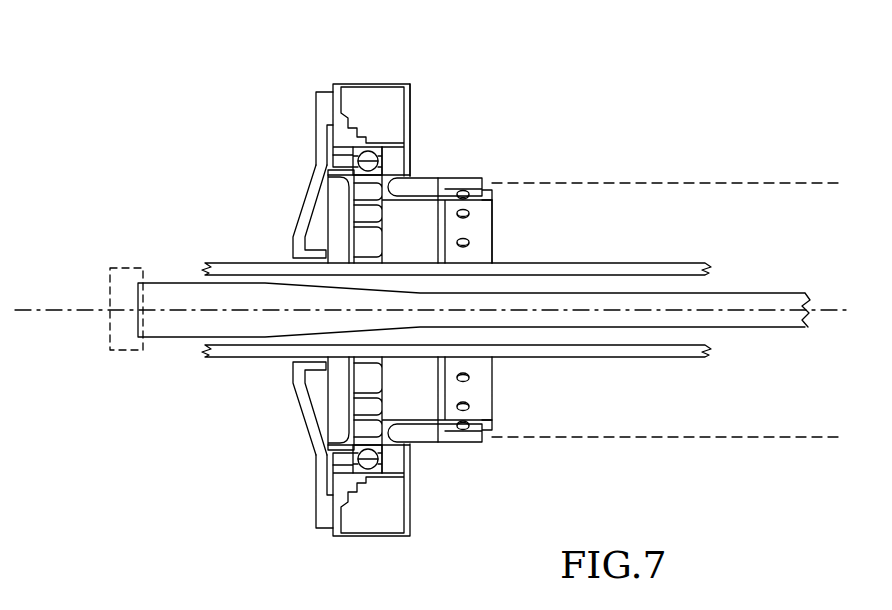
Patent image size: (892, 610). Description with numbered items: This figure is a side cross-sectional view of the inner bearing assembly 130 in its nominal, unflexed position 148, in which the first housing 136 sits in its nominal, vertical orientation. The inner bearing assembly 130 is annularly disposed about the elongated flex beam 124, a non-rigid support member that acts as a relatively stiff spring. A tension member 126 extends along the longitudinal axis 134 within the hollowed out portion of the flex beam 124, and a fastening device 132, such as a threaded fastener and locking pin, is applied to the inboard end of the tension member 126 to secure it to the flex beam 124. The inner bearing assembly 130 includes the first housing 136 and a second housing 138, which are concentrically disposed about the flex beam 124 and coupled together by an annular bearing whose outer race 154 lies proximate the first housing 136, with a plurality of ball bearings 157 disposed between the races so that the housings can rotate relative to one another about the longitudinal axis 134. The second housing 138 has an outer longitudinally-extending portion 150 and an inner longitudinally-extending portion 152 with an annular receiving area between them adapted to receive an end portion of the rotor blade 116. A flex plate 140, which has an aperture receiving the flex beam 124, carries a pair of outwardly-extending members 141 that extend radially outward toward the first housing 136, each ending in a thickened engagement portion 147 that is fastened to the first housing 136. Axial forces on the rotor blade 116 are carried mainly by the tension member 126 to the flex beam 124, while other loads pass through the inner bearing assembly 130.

The rotor blade 116 is at (735, 166).
The flex beam 124 is at (652, 263).
The tension member 126 is at (765, 330).
The inner bearing assembly 130 is at (512, 100).
The fastening device 132 is at (128, 268).
The longitudinal axis 134 is at (75, 308).
The first housing 136 is at (369, 84).
The second housing 138 is at (386, 418).
The flex plate 140 is at (305, 232).
The outwardly-extending members 141 is at (298, 136).
The thickened engagement portion 147 is at (322, 88).
The nominal, unflexed position 148 is at (640, 468).
The outer longitudinally-extending portion 150 is at (488, 180).
The inner longitudinally-extending portion 152 is at (482, 197).
The outer race 154 is at (376, 150).
The ball bearings 157 is at (378, 161).